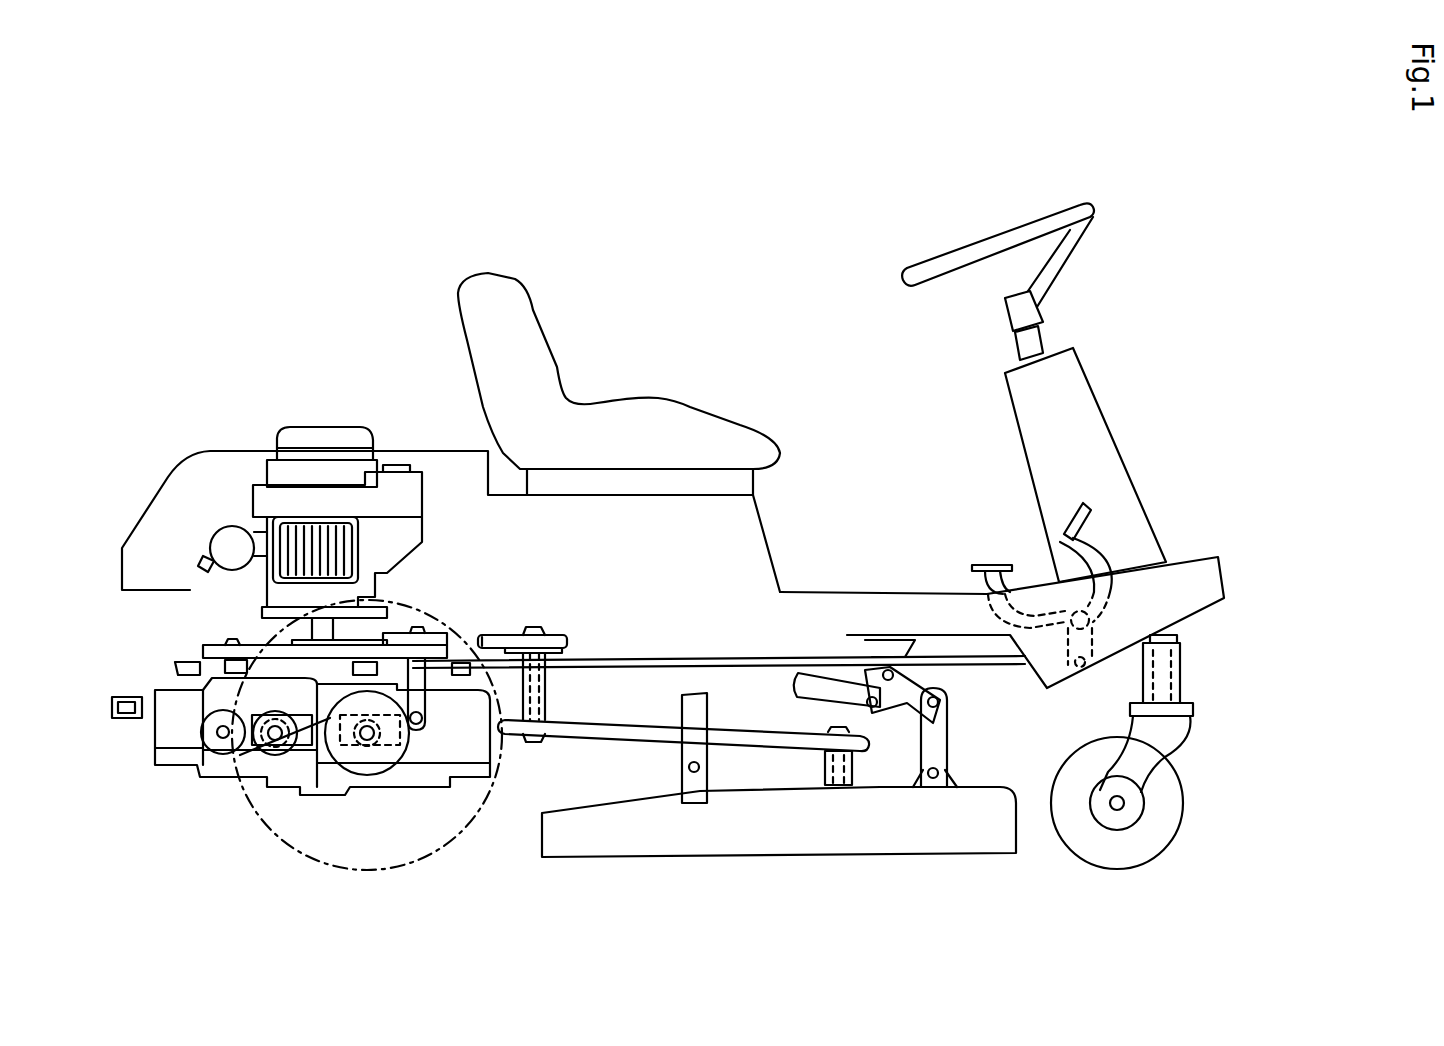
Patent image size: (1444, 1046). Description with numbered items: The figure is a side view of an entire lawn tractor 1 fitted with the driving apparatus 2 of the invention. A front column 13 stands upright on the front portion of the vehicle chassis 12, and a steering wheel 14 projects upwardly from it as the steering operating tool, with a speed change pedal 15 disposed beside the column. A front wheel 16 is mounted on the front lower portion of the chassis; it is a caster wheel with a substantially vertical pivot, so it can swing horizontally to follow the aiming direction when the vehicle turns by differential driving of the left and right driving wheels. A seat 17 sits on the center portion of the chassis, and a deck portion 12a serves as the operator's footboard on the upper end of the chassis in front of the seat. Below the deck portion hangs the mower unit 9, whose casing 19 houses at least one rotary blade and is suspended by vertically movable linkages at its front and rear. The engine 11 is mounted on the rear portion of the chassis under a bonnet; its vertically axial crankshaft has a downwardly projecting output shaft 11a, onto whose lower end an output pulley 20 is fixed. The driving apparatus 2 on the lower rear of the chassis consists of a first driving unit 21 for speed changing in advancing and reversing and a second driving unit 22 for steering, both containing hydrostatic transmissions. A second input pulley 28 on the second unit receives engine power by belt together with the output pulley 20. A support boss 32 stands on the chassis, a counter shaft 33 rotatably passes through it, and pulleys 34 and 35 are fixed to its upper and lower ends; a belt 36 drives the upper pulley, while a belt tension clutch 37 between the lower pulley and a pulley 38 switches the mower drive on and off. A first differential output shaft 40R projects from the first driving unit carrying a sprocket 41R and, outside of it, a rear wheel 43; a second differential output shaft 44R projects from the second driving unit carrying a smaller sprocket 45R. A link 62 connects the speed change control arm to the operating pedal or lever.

The riding lawn mower 1 is at (725, 198).
The driving apparatus 2 is at (165, 844).
The mower unit 9 is at (1000, 759).
The engine 11 is at (283, 468).
The output shaft 11a is at (287, 623).
The vehicle chassis 12 is at (1198, 565).
The deck portion 12a is at (808, 594).
The front column 13 is at (1100, 416).
The steering wheel 14 is at (945, 250).
The speed change pedal 15 is at (1002, 566).
The front wheel 16 is at (1186, 804).
The seat 17 is at (538, 322).
The casing 19 is at (1008, 830).
The output pulley 20 is at (358, 630).
The first driving unit 21 is at (418, 805).
The second driving unit 22 is at (216, 806).
The second input pulley 28 is at (203, 647).
The support boss 32 is at (548, 688).
The counter shaft 33 is at (534, 628).
The pulley 34 is at (558, 636).
The pulley 35 is at (556, 743).
The belt 36 is at (484, 640).
The belt tension clutch 37 is at (602, 738).
The pulley 38 is at (818, 732).
The first differential output shaft 40R is at (367, 748).
The sprocket 41R is at (365, 760).
The rear wheel 43 is at (468, 835).
The second differential output shaft 44R is at (278, 760).
The sprocket 45R is at (275, 755).
The link 62 is at (700, 660).